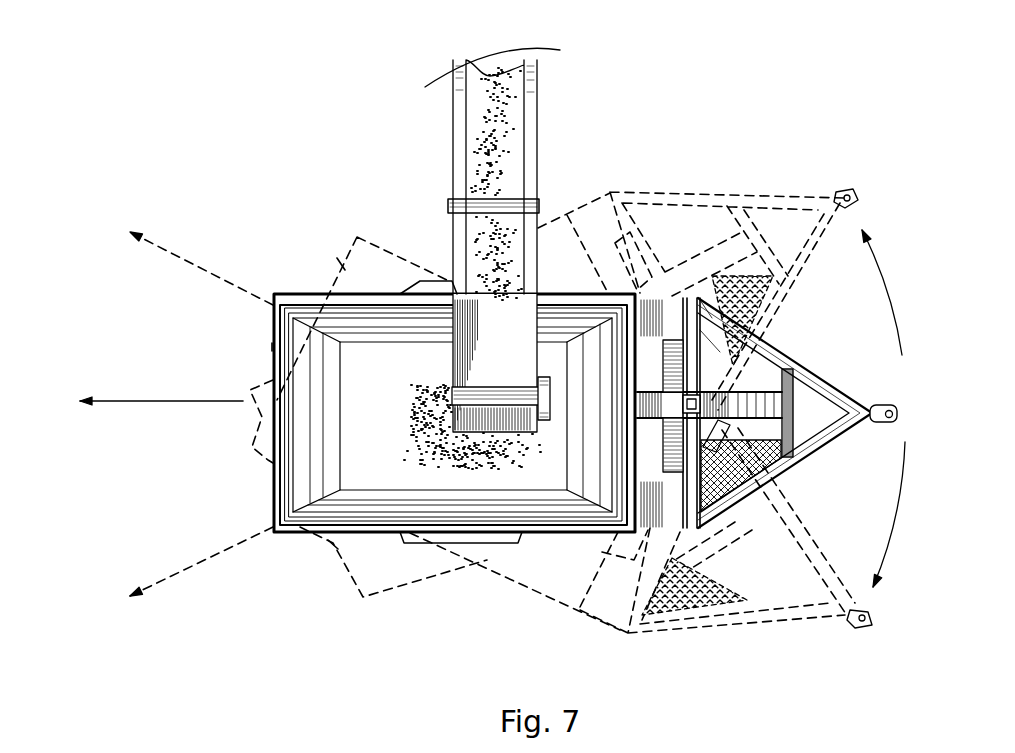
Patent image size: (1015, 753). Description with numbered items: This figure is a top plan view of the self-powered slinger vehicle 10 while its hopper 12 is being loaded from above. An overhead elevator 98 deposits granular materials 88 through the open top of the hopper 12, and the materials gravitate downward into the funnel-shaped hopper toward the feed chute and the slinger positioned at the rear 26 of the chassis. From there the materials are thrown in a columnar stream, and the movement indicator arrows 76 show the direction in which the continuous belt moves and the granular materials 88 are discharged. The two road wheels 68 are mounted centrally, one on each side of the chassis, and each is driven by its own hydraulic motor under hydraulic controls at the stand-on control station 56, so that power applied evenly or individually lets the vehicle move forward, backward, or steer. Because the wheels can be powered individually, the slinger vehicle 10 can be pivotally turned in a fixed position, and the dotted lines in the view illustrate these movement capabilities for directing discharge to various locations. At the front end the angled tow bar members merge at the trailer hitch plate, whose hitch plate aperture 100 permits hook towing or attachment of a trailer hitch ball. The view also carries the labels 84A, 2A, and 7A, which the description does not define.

The slinger vehicle 10 is at (350, 593).
The hopper 12 is at (501, 485).
The rear 26 is at (330, 545).
The stand-on control station 56 is at (685, 597).
The road wheels 68 is at (456, 546).
The movement indicator arrows 76 is at (157, 580).
The fin frame member 84A is at (790, 473).
The granular materials 88 is at (497, 98).
The elevator 98 is at (540, 86).
The hitch plate aperture 100 is at (897, 405).
The swung position indicator 2A is at (877, 624).
The hub axis indicator 7A is at (700, 400).